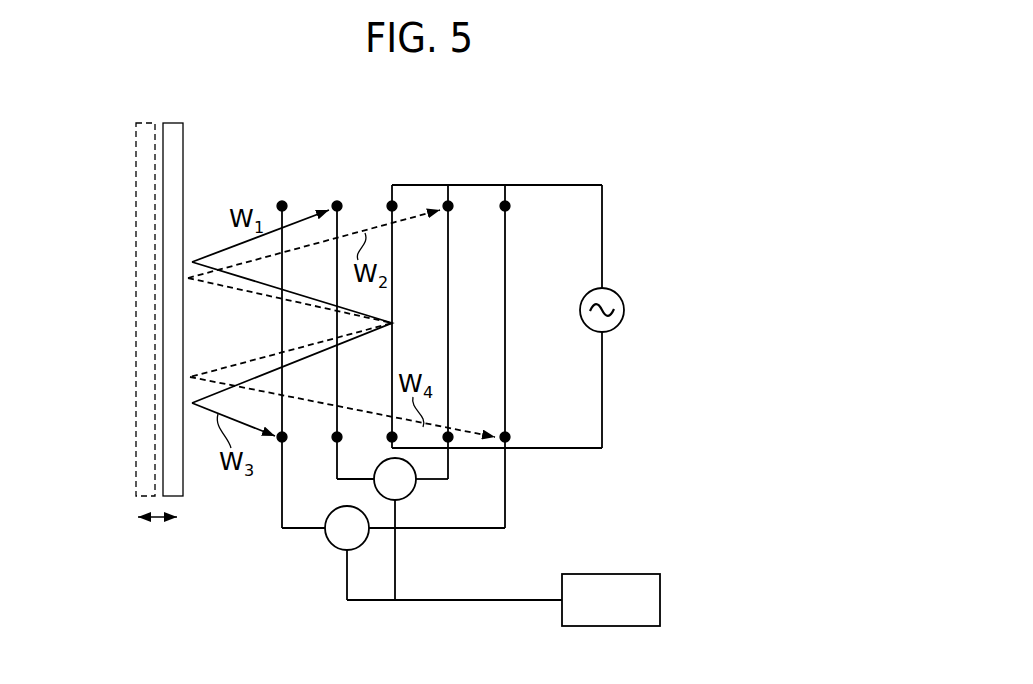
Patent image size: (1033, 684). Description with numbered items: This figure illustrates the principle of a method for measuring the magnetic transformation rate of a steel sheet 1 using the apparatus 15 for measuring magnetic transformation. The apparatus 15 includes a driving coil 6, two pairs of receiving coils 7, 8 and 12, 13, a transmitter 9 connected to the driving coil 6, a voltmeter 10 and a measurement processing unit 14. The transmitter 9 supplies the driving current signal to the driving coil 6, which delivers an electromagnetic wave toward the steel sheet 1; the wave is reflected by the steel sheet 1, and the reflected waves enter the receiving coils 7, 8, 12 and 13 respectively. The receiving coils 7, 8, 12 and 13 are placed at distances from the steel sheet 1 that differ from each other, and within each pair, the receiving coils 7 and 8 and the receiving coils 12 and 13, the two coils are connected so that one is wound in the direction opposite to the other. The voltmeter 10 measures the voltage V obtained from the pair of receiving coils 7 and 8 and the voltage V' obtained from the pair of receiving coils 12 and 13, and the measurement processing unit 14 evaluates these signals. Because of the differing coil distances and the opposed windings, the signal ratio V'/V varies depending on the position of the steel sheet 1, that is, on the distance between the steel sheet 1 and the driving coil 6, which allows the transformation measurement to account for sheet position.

The steel sheet 1 is at (175, 130).
The driving coil 6 is at (394, 200).
The receiving coil 7 is at (338, 200).
The receiving coil 8 is at (449, 200).
The transmitter 9 is at (608, 295).
The voltmeter 10 is at (403, 487).
The receiving coil 12 is at (283, 200).
The receiving coil 13 is at (505, 200).
The measurement processing unit 14 is at (648, 600).
The apparatus for measuring magnetic transformation 15 is at (630, 166).